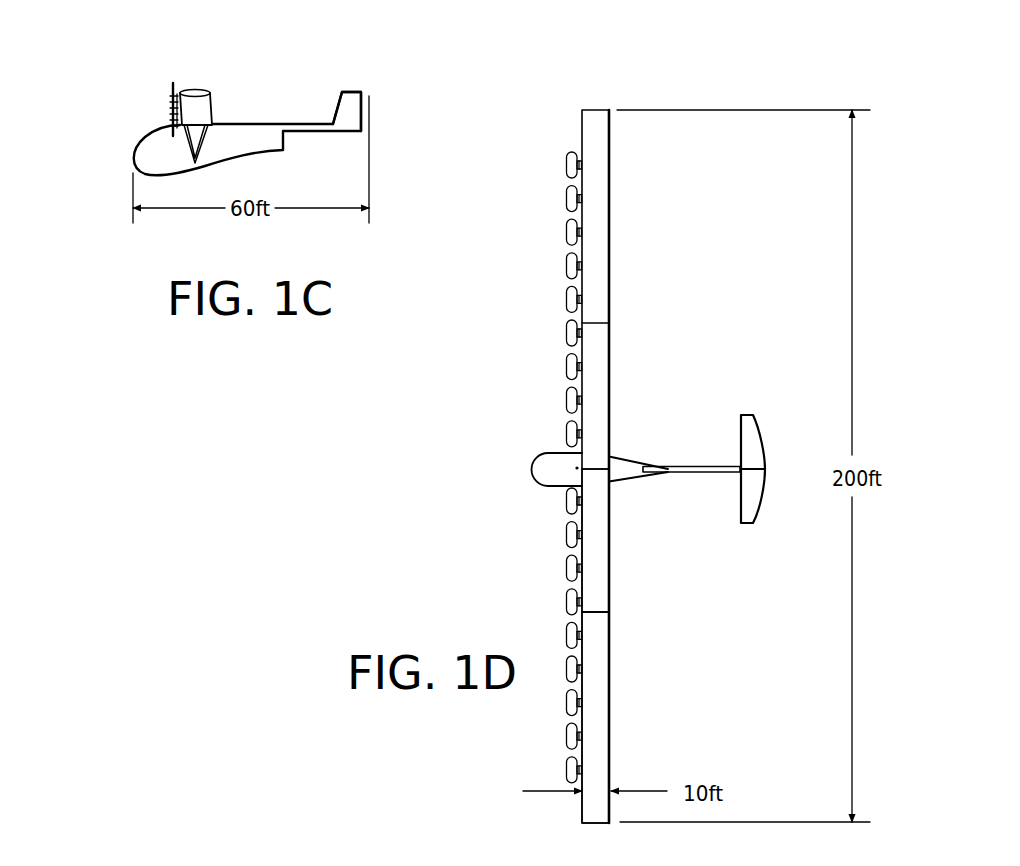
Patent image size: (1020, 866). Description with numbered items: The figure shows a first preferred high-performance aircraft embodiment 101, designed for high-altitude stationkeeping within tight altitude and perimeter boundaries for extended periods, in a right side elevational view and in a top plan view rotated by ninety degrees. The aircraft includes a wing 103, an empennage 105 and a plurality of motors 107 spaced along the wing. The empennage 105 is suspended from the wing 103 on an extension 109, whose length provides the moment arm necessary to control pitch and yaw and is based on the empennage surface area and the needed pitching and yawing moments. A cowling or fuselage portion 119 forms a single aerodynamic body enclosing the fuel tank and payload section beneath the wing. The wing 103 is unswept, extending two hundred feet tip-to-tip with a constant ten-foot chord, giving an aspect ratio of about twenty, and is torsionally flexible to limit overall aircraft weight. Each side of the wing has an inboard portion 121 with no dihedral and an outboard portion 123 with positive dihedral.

In FIG. 1D, the aircraft embodiment 101 is at (717, 311).
In FIG. 1C, the wing 103 is at (200, 108).
In FIG. 1D, the wing 103 is at (612, 345).
In FIG. 1C, the empennage 105 is at (352, 107).
In FIG. 1D, the empennage 105 is at (760, 440).
In FIG. 1D, the motors 107 is at (582, 202).
In FIG. 1D, the extension 109 is at (699, 463).
In FIG. 1C, the cowling or fuselage portion 119 is at (143, 157).
In FIG. 1D, the cowling or fuselage portion 119 is at (548, 453).
In FIG. 1D, the inboard portion 121 is at (598, 553).
In FIG. 1D, the outboard portion 123 is at (602, 693).